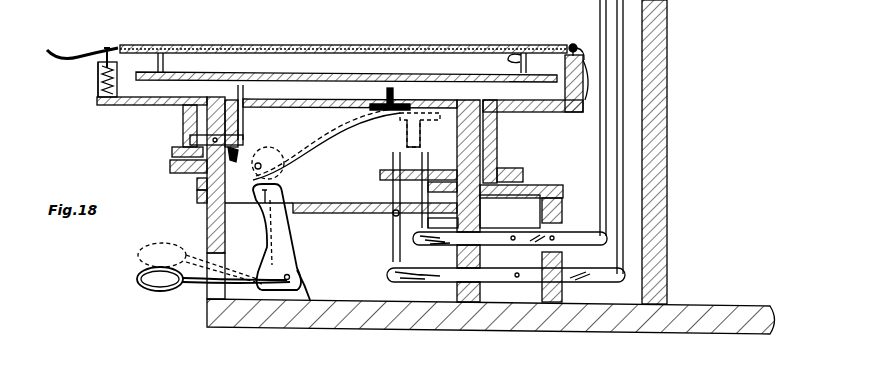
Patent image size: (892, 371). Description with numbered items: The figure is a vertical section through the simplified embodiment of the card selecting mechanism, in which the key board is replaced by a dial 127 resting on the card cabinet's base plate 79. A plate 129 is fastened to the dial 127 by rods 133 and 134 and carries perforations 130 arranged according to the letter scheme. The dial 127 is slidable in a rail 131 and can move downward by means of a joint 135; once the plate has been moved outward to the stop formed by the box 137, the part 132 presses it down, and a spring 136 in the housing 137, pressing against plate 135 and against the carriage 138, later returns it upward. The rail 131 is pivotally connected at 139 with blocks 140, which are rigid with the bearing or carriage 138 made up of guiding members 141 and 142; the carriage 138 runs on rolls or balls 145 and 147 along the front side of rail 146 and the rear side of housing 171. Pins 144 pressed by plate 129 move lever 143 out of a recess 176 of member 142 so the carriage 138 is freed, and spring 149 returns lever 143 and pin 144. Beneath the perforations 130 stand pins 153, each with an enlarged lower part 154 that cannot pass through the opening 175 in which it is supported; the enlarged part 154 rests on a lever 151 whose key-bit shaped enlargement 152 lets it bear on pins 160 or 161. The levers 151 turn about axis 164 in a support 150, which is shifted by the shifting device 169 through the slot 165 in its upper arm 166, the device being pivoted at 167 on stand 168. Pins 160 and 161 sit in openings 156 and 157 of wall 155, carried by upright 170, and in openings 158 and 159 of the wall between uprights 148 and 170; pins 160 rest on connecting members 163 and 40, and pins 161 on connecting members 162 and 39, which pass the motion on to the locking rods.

The connecting member 39 is at (582, 232).
The connecting member 40 is at (597, 270).
The base plate 79 is at (730, 312).
The dial 127 is at (272, 45).
The plate 129 is at (328, 73).
The perforations 130 is at (370, 45).
The rail 131 is at (108, 47).
The part (lever) 132 is at (68, 50).
The rod 133 is at (163, 58).
The rod 134 is at (521, 50).
The joint (plate) 135 is at (98, 72).
The spring 136 is at (100, 84).
The box (housing) 137 is at (97, 97).
The bearing (carriage) 138 is at (135, 104).
The pivot 139 is at (573, 44).
The block 140 is at (586, 100).
The guiding member 141 is at (497, 140).
The guiding member (connecting member) 142 is at (225, 112).
The lever 143 is at (190, 138).
The pin 144 is at (244, 90).
The rolls or balls 145 is at (172, 152).
The rail 146 is at (170, 166).
The rolls or balls 147 is at (510, 172).
The upright 148 is at (197, 200).
The spring 149 is at (197, 184).
The support 150 is at (300, 170).
The lever 151 is at (300, 150).
The key-bit shaped enlargement 152 is at (400, 140).
The pin 153 is at (410, 106).
The enlarged lower part 154 is at (387, 98).
The wall 155 is at (436, 176).
The opening 156 is at (442, 192).
The opening 157 is at (393, 188).
The opening 158 is at (455, 246).
The opening 159 is at (390, 214).
The pin 160 is at (394, 232).
The pin 161 is at (400, 236).
The connecting member 162 is at (420, 244).
The connecting member 163 is at (388, 274).
The axis 164 is at (262, 148).
The slot 165 is at (262, 222).
The upper arm 166 is at (280, 245).
The pivot 167 is at (290, 274).
The stand 168 is at (306, 295).
The shifting device (lever) 169 is at (160, 290).
The upright 170 is at (480, 212).
The housing 171 is at (562, 200).
The opening 175 is at (460, 102).
The recess 176 is at (238, 135).